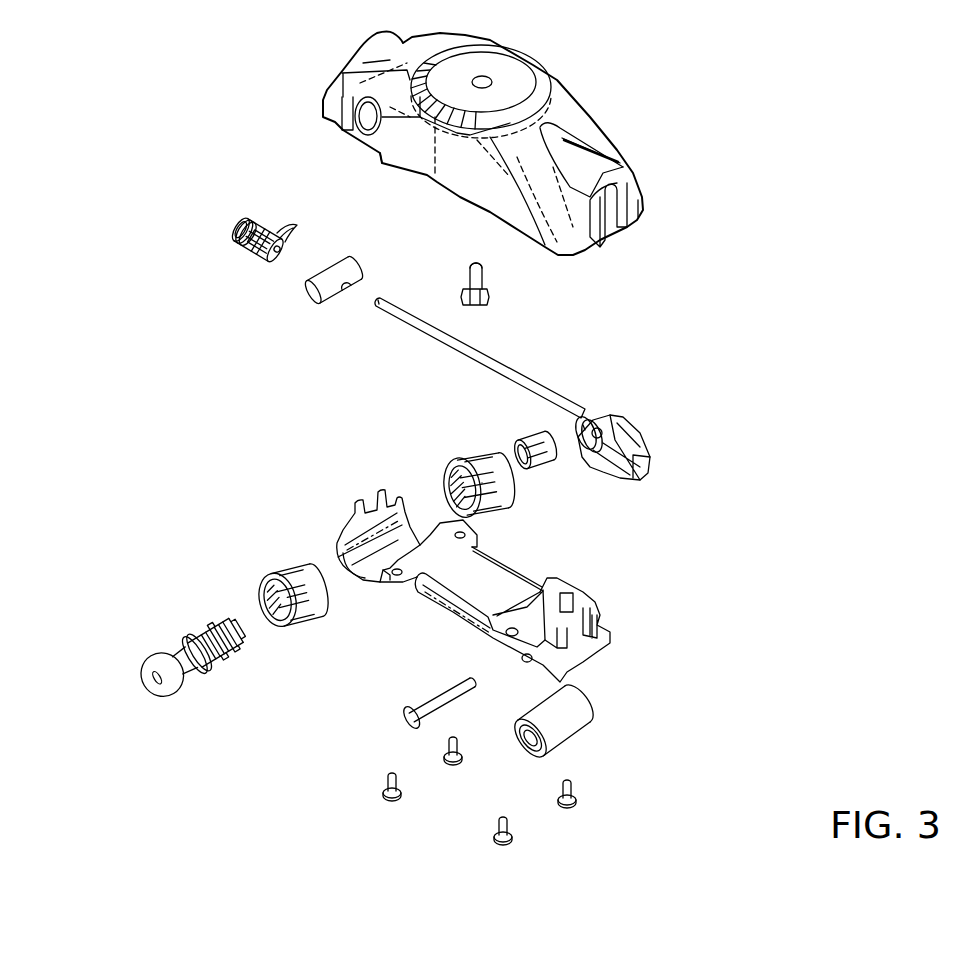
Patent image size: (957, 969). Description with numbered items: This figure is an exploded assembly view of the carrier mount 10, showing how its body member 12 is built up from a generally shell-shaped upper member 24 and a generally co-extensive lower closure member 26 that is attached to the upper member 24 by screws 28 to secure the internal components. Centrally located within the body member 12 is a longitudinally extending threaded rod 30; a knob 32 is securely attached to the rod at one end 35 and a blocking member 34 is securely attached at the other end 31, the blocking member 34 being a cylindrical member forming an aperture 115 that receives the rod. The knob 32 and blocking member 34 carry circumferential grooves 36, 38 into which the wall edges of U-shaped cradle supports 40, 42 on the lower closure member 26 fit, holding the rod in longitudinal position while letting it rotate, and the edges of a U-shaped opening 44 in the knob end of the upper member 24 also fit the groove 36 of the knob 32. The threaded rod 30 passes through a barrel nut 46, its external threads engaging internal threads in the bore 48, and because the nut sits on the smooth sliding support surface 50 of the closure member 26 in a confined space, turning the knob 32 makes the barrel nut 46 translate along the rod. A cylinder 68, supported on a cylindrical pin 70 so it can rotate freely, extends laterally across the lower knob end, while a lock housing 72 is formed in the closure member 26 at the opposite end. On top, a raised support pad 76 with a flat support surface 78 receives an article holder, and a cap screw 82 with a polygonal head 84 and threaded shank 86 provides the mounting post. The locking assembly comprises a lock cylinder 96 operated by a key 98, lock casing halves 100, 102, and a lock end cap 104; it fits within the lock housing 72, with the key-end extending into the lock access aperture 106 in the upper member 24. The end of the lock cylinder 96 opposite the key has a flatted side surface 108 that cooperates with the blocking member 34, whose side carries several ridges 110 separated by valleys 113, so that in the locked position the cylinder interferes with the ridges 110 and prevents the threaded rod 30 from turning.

The carrier mount 10 is at (794, 440).
The body member 12 is at (620, 260).
The upper member 24 is at (479, 137).
The lower closure member 26 is at (615, 636).
The screws 28 is at (453, 772).
The threaded rod 30 is at (402, 320).
The other end of threaded rod 31 is at (375, 307).
The knob 32 is at (650, 470).
The blocking member 34 is at (233, 226).
The one end of threaded rod 35 is at (563, 420).
The circumferential groove of knob 36 is at (590, 418).
The circumferential groove of blocking member 38 is at (245, 220).
The U-shaped cradle support 40 is at (357, 512).
The U-shaped cradle support 42 is at (598, 612).
The U-shaped opening 44 is at (607, 233).
The barrel nut 46 is at (305, 292).
The bore 48 is at (347, 284).
The sliding support surface 50 is at (500, 575).
The cylinder 68 is at (565, 740).
The cylindrical pin 70 is at (408, 722).
The lock housing 72 is at (355, 575).
The support pad 76 is at (605, 70).
The support surface 78 is at (517, 73).
The cap screw 82 is at (466, 250).
The head 84 is at (487, 295).
The threaded shank 86 is at (487, 272).
The lock cylinder 96 is at (243, 719).
The key 98 is at (165, 657).
The lock casing half 100 is at (466, 465).
The lock casing half 102 is at (368, 556).
The lock end cap 104 is at (516, 447).
The lock access aperture 106 is at (345, 120).
The flatted side surface 108 is at (230, 618).
The ridges 110 is at (297, 225).
The valley 113 is at (240, 222).
The aperture 115 is at (272, 258).